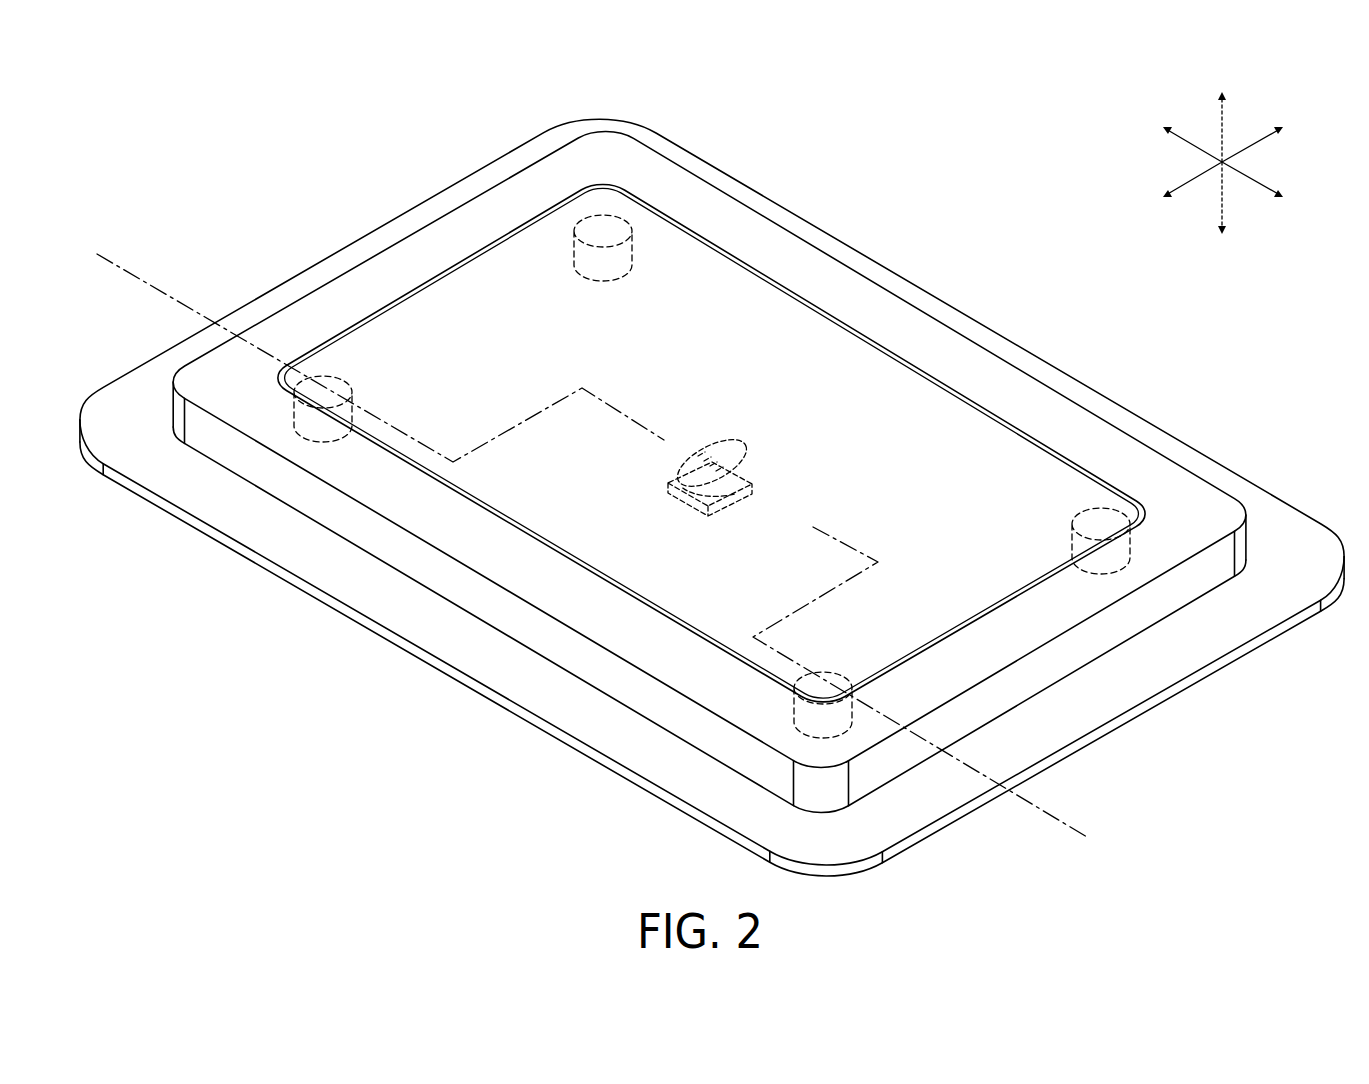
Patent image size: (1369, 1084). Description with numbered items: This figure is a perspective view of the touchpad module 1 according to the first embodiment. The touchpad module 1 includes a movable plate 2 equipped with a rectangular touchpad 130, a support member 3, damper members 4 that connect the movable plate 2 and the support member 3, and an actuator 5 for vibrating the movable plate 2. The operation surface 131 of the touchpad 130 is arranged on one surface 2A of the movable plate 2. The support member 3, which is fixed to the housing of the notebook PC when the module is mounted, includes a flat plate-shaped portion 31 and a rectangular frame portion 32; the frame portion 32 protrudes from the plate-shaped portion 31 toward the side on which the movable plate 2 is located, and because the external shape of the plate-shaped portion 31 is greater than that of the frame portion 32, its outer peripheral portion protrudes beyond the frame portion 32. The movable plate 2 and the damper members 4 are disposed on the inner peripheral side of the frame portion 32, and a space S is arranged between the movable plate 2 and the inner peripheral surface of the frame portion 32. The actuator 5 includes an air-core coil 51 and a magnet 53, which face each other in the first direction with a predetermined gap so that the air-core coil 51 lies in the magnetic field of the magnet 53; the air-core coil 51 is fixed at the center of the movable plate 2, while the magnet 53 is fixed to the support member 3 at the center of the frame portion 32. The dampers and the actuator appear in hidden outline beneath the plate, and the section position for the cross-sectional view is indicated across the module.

The touchpad module 1 is at (176, 116).
The movable plate 2 is at (621, 467).
The one surface 2A is at (617, 512).
The support member 3 is at (172, 598).
The plate-shaped portion 31 is at (323, 568).
The frame portion 32 is at (340, 470).
The damper member 4 is at (597, 218).
The actuator 5 is at (845, 432).
The air-core coil 51 is at (742, 442).
The magnet 53 is at (750, 507).
The touchpad 130 is at (673, 263).
The operation surface 131 is at (612, 361).
The space S is at (876, 345).